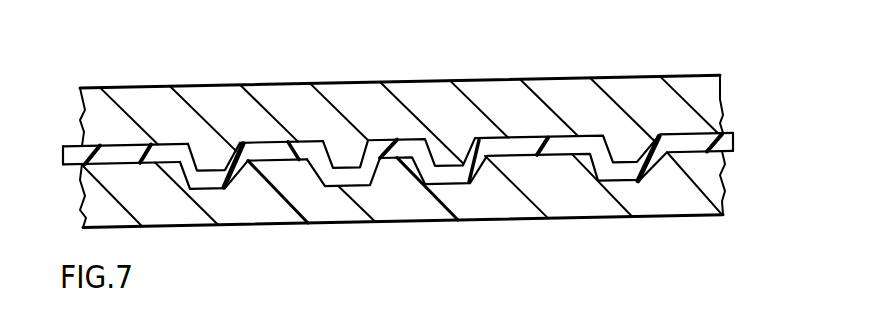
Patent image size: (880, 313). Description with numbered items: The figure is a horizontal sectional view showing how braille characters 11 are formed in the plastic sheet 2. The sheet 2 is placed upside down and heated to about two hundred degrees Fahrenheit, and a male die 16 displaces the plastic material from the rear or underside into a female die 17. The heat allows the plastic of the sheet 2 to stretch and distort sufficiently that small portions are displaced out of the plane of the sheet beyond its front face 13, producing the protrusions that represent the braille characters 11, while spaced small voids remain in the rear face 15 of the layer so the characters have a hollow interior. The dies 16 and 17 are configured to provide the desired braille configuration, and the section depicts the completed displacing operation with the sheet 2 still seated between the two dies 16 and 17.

The plastic sheet 2 is at (727, 132).
The braille characters 11 is at (398, 205).
The front face 13 is at (125, 154).
The rear face 15 is at (281, 151).
The male die 16 is at (422, 87).
The female die 17 is at (501, 209).